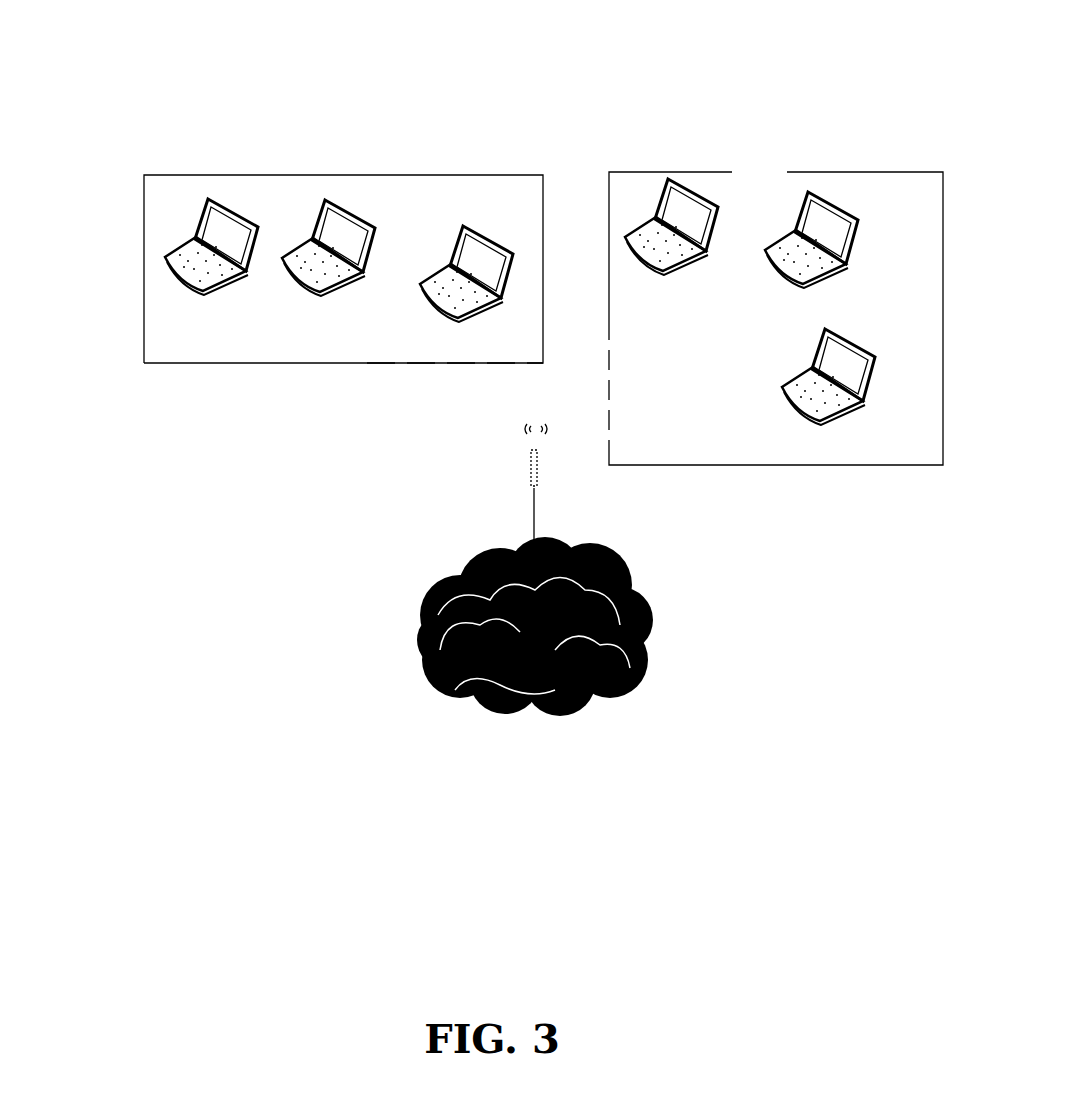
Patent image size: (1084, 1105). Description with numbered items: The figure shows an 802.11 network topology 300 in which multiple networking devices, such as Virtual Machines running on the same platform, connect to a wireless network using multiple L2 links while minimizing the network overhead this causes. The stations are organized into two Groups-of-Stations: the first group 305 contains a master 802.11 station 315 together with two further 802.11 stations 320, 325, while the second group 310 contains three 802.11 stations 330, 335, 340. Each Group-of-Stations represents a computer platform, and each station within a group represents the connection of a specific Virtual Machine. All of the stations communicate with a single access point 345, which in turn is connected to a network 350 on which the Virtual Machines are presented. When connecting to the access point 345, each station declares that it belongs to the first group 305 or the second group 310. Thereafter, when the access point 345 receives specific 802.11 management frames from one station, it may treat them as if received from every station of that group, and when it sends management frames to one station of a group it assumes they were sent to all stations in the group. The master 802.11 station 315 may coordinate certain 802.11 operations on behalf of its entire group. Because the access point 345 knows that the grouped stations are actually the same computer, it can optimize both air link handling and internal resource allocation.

The 802.11 network topology 300 is at (496, 373).
The group 1 305 is at (305, 260).
The group 2 310 is at (771, 301).
The master 802.11 station 315 is at (157, 308).
The 802.11 station 320 is at (285, 309).
The 802.11 station 325 is at (490, 226).
The 802.11 station 330 is at (661, 211).
The 802.11 station 335 is at (798, 227).
The 802.11 station 340 is at (779, 414).
The access point 345 is at (438, 488).
The network 350 is at (491, 632).